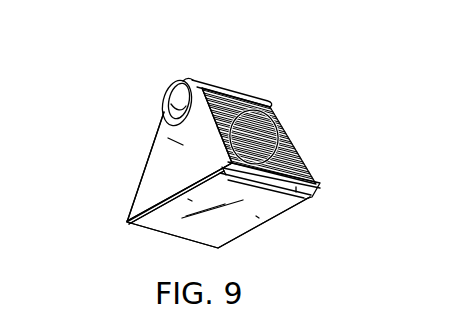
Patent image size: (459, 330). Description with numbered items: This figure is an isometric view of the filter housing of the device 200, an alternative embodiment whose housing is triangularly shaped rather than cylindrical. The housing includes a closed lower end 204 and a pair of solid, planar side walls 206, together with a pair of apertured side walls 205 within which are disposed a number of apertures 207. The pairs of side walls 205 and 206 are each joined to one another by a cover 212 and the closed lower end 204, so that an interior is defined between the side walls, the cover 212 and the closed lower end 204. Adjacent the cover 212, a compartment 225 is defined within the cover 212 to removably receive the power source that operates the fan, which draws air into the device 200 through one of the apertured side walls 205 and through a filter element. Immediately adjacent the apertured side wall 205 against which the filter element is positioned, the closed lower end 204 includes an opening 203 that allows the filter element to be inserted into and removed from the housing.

The device 200 is at (252, 66).
The opening 203 is at (296, 188).
The closed lower end 204 is at (167, 221).
The apertured side walls 205 is at (270, 105).
The solid, planar side walls 206 is at (165, 157).
The apertures 207 is at (283, 150).
The cover 212 is at (207, 82).
The compartment 225 is at (166, 94).